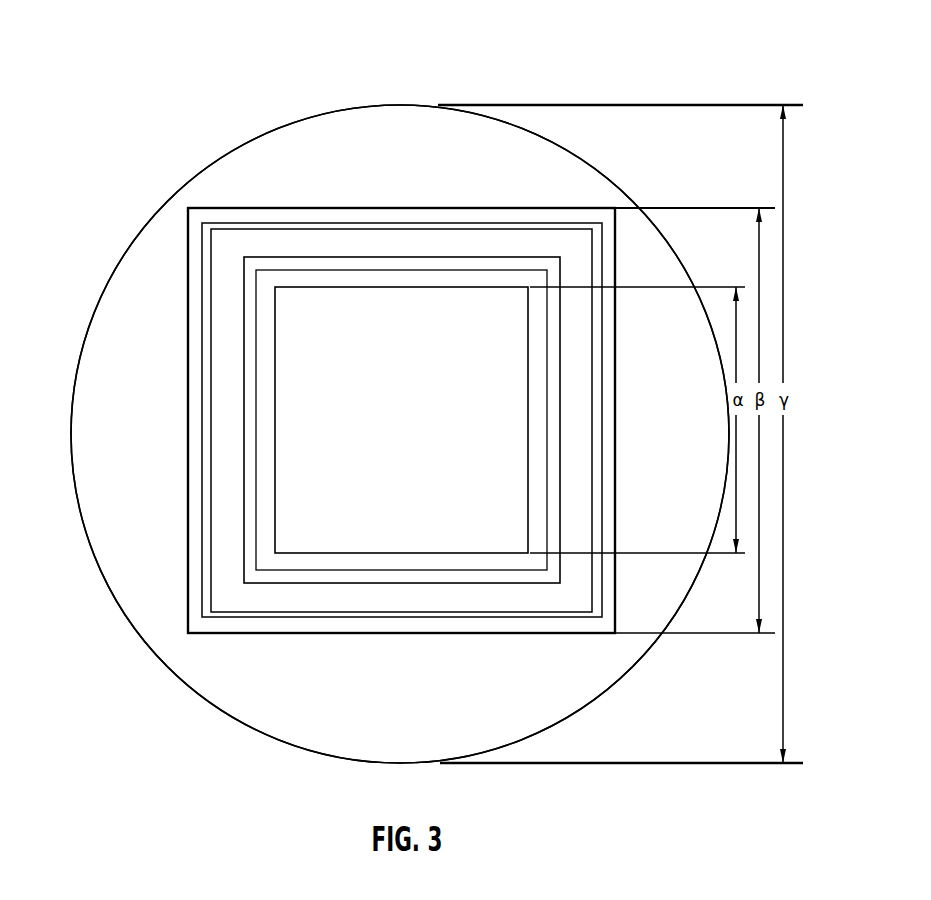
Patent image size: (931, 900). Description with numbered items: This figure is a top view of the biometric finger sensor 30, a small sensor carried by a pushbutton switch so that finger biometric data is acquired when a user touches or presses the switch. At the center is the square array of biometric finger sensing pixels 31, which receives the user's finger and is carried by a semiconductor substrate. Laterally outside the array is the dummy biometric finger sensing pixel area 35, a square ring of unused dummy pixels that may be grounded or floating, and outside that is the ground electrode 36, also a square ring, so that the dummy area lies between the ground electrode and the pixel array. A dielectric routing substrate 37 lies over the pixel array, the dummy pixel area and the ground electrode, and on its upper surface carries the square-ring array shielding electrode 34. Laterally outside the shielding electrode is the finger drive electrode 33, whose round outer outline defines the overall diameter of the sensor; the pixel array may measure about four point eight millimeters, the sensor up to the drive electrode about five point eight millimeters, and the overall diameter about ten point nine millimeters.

The biometric finger sensor 30 is at (208, 115).
The array of biometric finger sensing pixels 31 is at (315, 353).
The finger drive electrode 33 is at (227, 678).
The array shielding electrode 34 is at (227, 579).
The dummy biometric finger sensing pixel area 35 is at (266, 352).
The ground electrode 36 is at (247, 380).
The dielectric routing substrate 37 is at (197, 473).